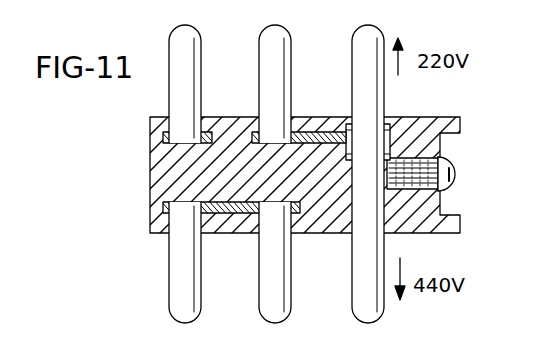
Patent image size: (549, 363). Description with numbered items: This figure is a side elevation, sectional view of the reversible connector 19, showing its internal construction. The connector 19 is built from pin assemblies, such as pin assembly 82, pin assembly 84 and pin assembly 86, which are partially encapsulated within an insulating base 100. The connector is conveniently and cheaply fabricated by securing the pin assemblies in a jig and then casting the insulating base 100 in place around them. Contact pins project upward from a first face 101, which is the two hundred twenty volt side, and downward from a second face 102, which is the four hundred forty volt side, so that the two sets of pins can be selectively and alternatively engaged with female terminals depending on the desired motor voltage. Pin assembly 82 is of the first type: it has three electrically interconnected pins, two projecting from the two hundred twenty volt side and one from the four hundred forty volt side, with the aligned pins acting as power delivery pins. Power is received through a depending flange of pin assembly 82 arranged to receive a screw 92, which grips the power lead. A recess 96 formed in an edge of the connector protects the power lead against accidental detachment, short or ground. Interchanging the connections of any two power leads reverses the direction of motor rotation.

The connector 19 is at (126, 186).
The pin assembly 82 is at (336, 117).
The pin assembly 84 is at (163, 137).
The pin assembly 86 is at (151, 212).
The screw 92 is at (450, 184).
The recess 96 is at (452, 133).
The insulating base 100 is at (150, 225).
The first face 101 is at (228, 117).
The second face 102 is at (228, 233).